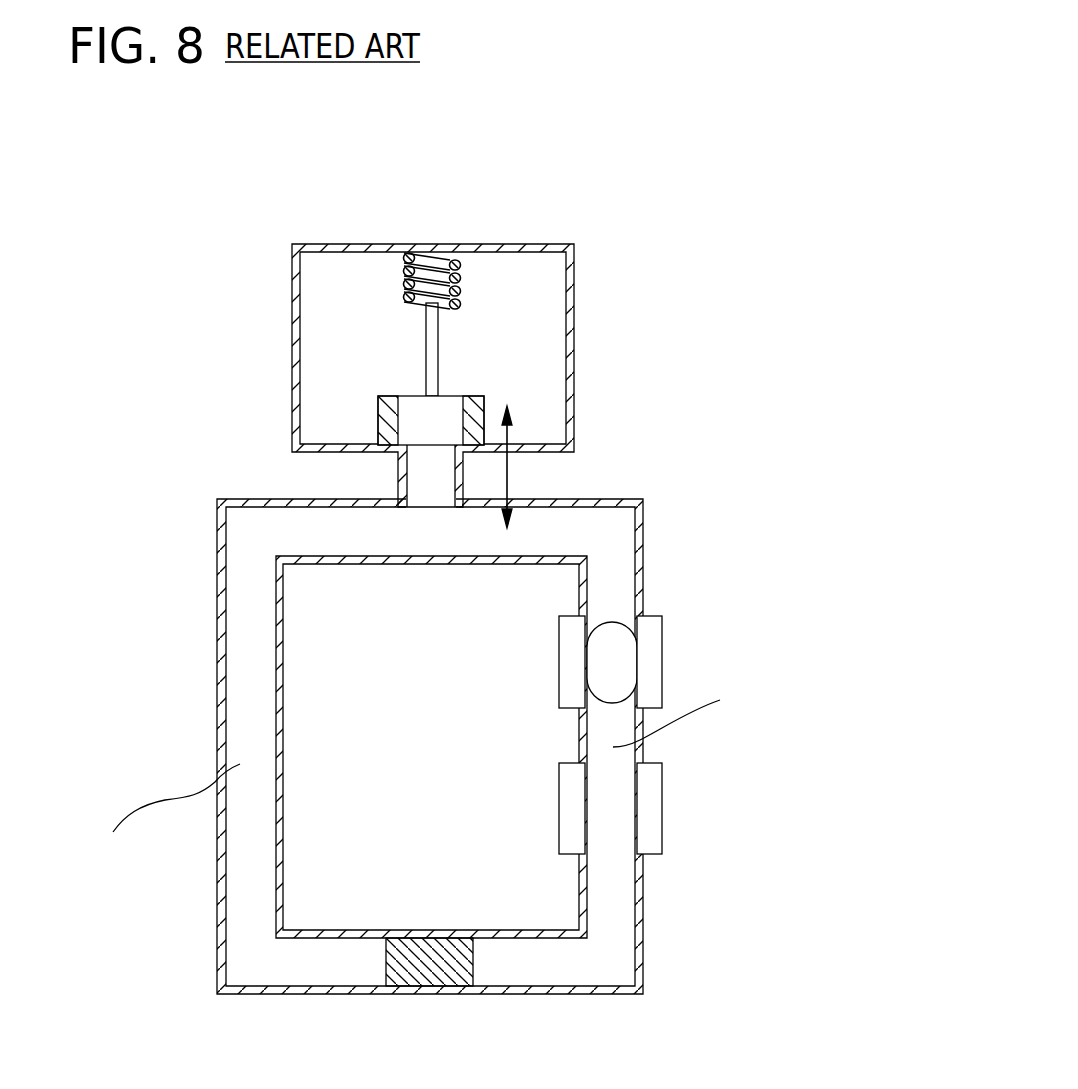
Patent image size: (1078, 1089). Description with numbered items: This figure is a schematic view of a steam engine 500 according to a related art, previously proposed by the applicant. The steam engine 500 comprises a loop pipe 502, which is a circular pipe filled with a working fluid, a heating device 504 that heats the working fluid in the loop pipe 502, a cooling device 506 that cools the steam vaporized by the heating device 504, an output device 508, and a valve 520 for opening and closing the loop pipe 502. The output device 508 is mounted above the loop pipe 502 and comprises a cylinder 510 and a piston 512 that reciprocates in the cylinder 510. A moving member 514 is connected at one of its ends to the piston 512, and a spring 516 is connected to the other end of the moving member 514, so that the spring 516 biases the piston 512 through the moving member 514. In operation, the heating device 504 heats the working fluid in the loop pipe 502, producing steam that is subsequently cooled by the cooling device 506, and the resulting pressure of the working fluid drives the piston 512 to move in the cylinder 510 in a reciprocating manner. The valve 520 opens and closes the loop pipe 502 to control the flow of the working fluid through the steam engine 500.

The steam engine 500 is at (706, 264).
The loop pipe 502 is at (598, 500).
The heating device 504 is at (647, 826).
The cooling device 506 is at (647, 651).
The output device 508 is at (575, 241).
The cylinder 510 is at (392, 411).
The piston 512 is at (414, 402).
The moving member 514 is at (431, 321).
The spring 516 is at (423, 273).
The valve 520 is at (417, 978).